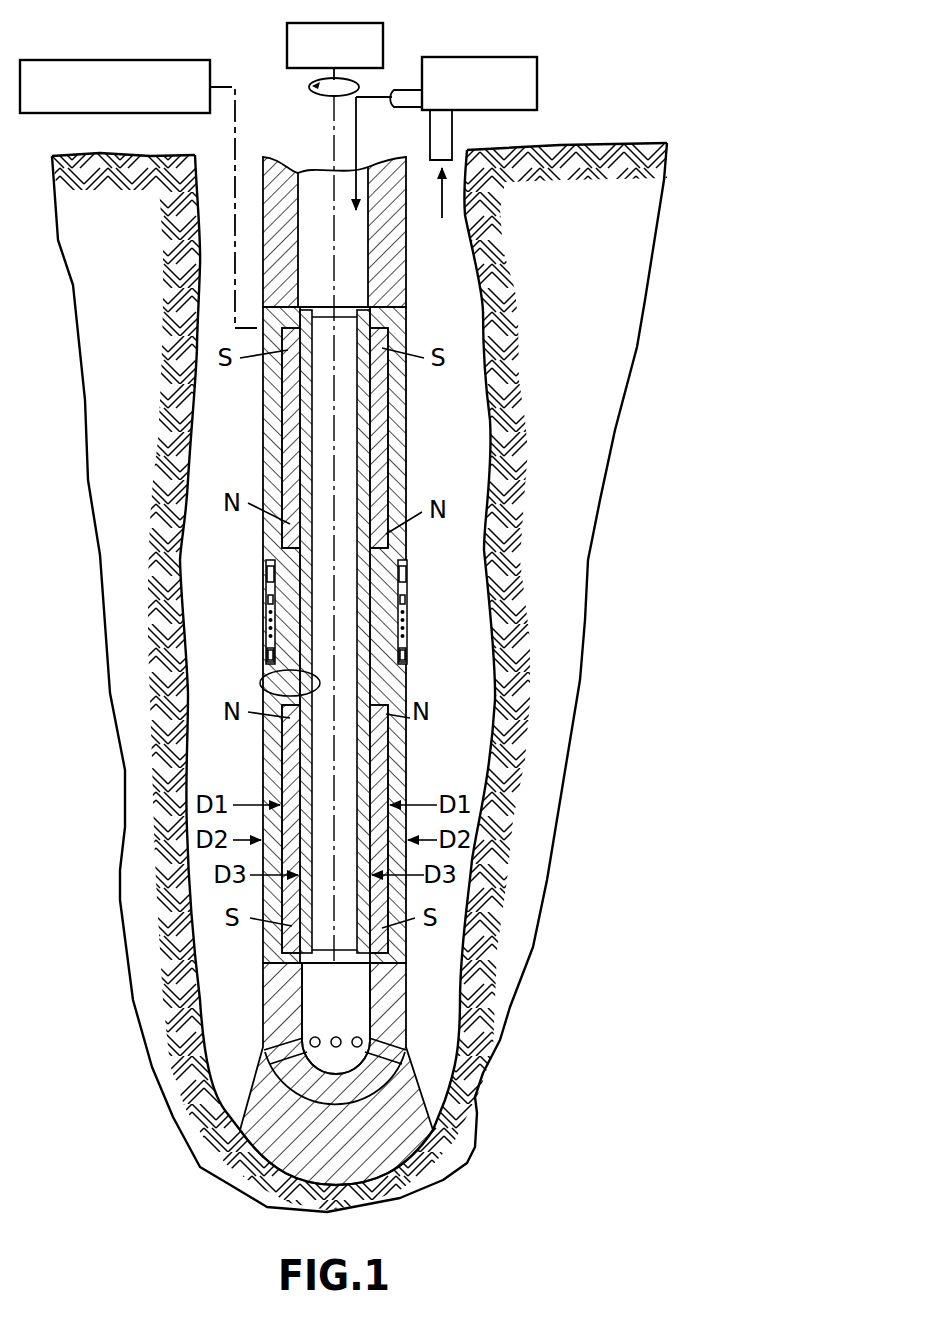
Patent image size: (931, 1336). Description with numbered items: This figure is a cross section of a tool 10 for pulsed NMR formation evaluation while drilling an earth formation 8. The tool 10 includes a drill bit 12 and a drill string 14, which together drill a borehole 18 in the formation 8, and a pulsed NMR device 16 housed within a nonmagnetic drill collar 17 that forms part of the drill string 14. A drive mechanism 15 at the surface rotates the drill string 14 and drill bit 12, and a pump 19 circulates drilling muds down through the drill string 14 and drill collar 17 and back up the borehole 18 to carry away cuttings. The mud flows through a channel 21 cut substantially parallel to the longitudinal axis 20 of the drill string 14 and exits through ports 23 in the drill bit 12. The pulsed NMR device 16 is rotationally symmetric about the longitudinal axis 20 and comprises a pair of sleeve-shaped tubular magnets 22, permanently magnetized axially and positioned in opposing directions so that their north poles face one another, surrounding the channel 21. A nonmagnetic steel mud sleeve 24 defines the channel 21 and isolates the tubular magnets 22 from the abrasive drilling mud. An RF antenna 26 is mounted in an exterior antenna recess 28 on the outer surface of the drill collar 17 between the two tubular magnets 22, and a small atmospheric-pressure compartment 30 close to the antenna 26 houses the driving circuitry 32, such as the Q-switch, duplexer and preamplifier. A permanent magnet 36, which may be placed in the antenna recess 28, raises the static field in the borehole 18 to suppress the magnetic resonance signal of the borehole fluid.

The earth formation 8 is at (575, 325).
The tool 10 is at (585, 394).
The drill bit 12 is at (333, 1074).
The drill string 14 is at (406, 290).
The drive mechanism 15 is at (296, 23).
The pulsed NMR device 16 is at (463, 553).
The drill collar 17 is at (406, 455).
The borehole 18 is at (492, 705).
The pump 19 is at (538, 64).
The longitudinal axis 20 is at (326, 149).
The channel 21 is at (322, 432).
The tubular magnets 22 is at (290, 452).
The ports 23 is at (390, 1047).
The mud sleeve 24 is at (300, 672).
The RF antenna 26 is at (252, 646).
The antenna recess 28 is at (268, 655).
The compartment 30 is at (288, 560).
The driving circuitry 32 is at (270, 572).
The permanent magnet 36 is at (258, 602).